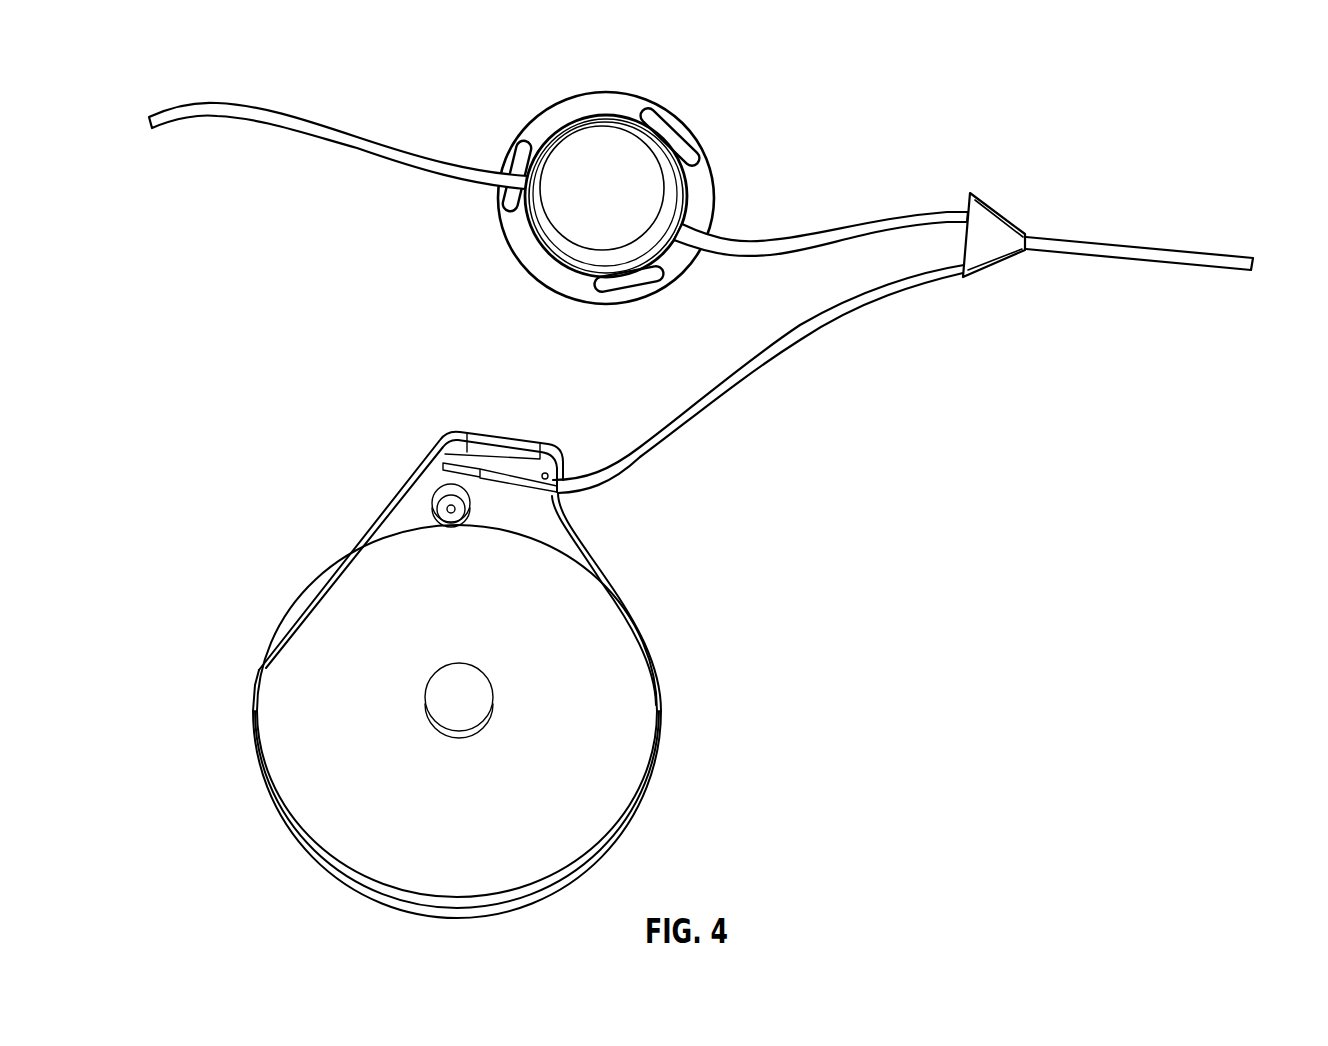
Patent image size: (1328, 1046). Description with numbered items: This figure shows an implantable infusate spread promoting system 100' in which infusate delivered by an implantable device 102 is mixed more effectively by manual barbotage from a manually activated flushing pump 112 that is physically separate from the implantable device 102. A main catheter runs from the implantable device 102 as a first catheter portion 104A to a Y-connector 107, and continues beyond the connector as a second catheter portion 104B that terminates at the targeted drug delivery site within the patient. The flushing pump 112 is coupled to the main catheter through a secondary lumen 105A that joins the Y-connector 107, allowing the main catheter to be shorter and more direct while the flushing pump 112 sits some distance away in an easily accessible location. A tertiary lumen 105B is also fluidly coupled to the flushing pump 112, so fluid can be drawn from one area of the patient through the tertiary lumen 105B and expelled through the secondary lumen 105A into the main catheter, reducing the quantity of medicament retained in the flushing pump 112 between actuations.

The implantable infusate spread promoting system 100' is at (324, 331).
The implantable device 102 is at (607, 628).
The first catheter portion 104A is at (708, 400).
The second catheter portion 104B is at (1150, 247).
The secondary lumen 105A is at (885, 216).
The tertiary lumen 105B is at (343, 131).
The Y-connector 107 is at (993, 210).
The manually activated flushing pump 112 is at (602, 152).